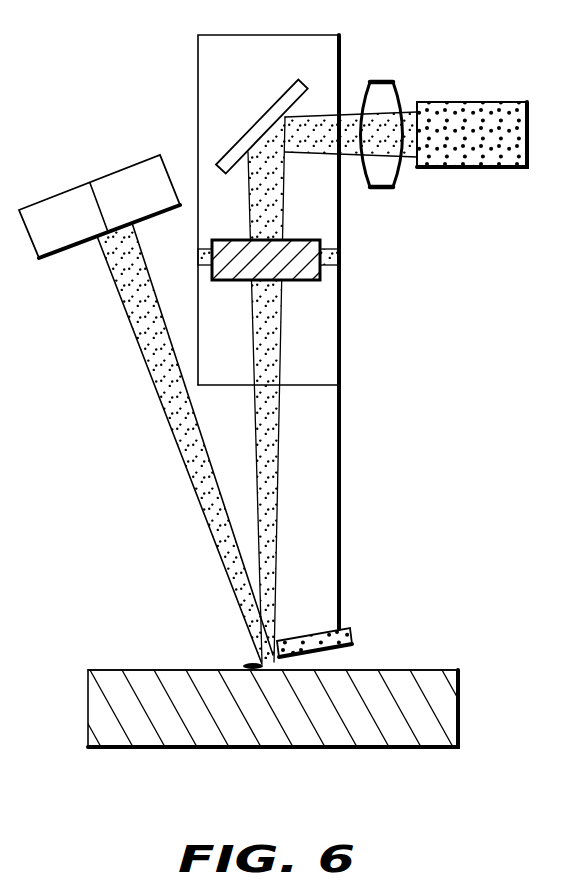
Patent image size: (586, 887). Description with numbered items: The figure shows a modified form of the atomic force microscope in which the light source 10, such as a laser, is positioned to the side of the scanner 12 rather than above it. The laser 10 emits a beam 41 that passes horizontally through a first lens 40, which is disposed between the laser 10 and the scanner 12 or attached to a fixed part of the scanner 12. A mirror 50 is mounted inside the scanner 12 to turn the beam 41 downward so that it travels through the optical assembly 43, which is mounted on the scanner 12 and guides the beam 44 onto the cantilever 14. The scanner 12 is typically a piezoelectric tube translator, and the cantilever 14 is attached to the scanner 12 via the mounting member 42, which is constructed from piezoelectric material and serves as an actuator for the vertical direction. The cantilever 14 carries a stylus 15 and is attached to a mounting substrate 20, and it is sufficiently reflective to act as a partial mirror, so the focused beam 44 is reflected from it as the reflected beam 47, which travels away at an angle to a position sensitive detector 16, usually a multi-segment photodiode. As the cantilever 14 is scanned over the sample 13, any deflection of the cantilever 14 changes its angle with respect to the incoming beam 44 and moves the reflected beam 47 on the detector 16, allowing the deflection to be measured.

The light source 10 is at (528, 120).
The scanner 12 is at (198, 78).
The sample 13 is at (88, 705).
The cantilever 14 is at (262, 667).
The stylus 15 is at (246, 665).
The position sensitive detector 16 is at (78, 196).
The mounting substrate 20 is at (350, 630).
The first lens 40 is at (378, 82).
The beam 41 is at (284, 186).
The mounting member 42 is at (341, 420).
The optical assembly 43 is at (295, 245).
The beam 44 is at (280, 327).
The reflected beam 47 is at (123, 312).
The mirror 50 is at (270, 104).